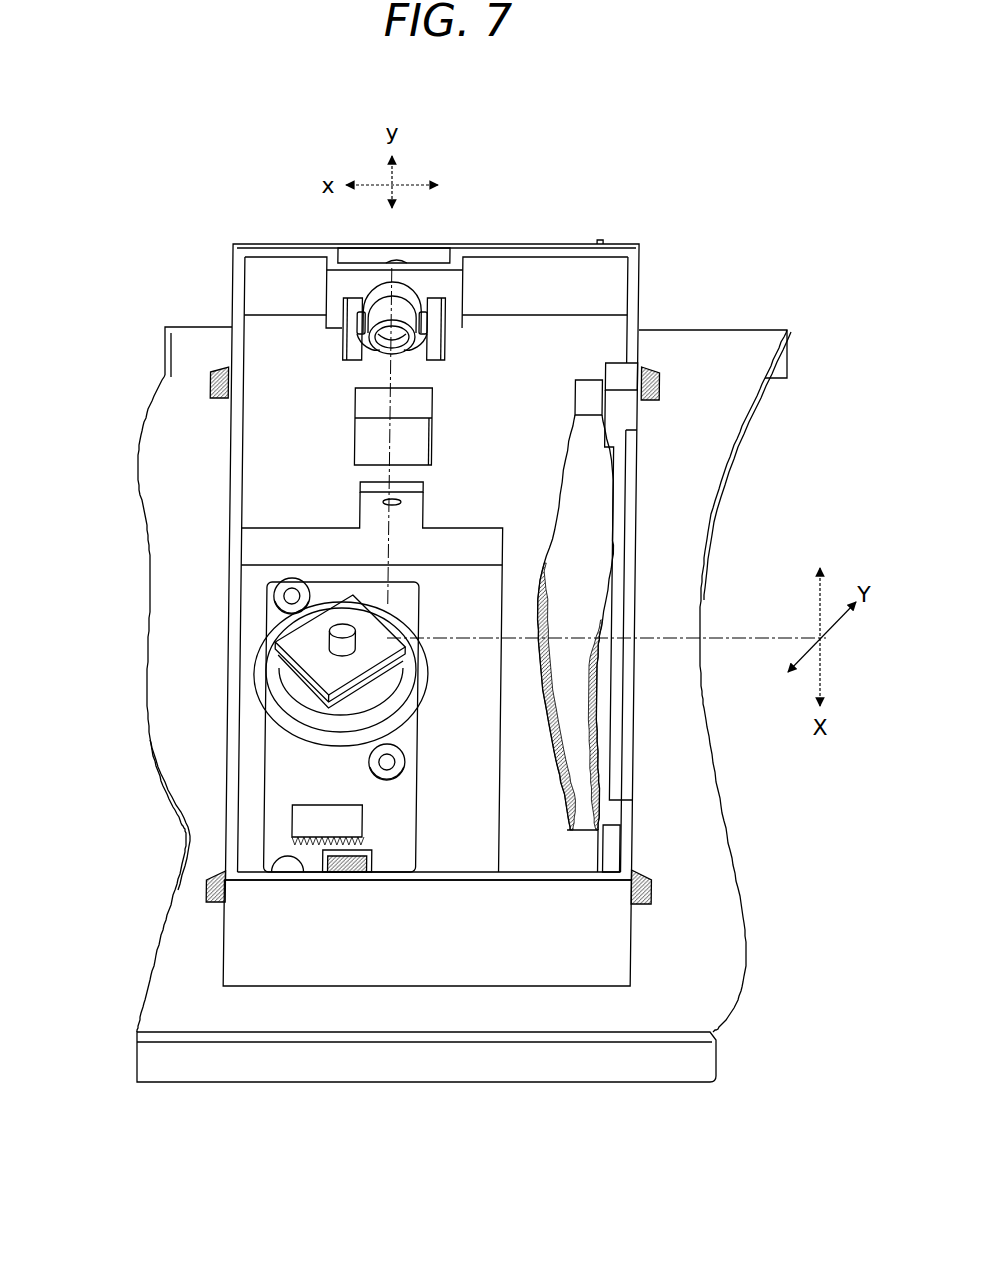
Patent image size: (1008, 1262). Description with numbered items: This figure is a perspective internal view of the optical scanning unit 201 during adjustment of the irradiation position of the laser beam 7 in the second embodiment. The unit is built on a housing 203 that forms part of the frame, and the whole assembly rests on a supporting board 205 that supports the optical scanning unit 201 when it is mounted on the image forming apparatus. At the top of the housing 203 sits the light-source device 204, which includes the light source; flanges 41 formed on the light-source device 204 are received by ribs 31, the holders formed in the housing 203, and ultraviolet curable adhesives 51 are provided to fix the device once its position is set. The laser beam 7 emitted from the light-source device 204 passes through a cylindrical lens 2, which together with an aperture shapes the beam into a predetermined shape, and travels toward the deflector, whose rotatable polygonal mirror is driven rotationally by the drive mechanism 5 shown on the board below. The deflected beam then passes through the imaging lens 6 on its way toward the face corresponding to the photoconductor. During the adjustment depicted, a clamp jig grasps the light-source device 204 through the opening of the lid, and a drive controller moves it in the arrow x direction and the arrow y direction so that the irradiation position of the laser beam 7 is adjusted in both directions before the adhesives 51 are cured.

The optical scanning unit 201 is at (153, 140).
The cylindrical lens 2 is at (586, 426).
The drive mechanism 5 is at (235, 725).
The imaging lens 6 is at (677, 605).
The laser beam 7 is at (464, 679).
The ribs 31 is at (238, 417).
The flanges 41 is at (423, 293).
The ultraviolet curable adhesives 51 is at (456, 240).
The housing 203 is at (426, 1036).
The light-source device 204 is at (433, 517).
The supporting board 205 is at (426, 1102).